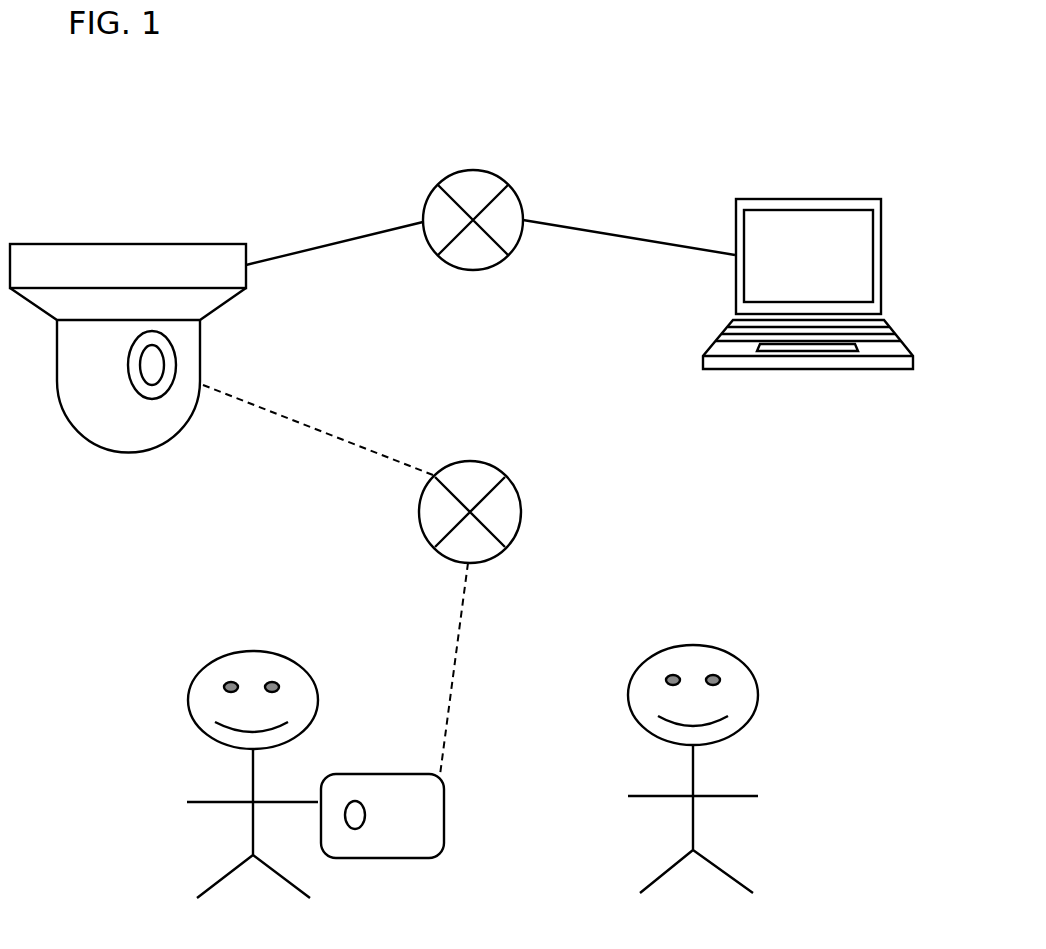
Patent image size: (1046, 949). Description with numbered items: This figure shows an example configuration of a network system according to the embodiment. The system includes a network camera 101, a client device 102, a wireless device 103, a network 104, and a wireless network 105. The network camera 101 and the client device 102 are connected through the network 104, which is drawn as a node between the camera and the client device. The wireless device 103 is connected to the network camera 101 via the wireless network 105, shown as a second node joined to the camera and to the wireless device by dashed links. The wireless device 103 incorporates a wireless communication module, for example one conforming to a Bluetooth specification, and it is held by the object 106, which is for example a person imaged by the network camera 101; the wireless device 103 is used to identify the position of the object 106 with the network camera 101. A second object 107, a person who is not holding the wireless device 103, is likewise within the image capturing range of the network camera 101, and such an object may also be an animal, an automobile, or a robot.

The network camera 101 is at (178, 244).
The client device 102 is at (843, 199).
The wireless device 103 is at (388, 774).
The network 104 is at (490, 172).
The wireless network 105 is at (492, 467).
The object 106 is at (278, 654).
The object 107 is at (733, 654).